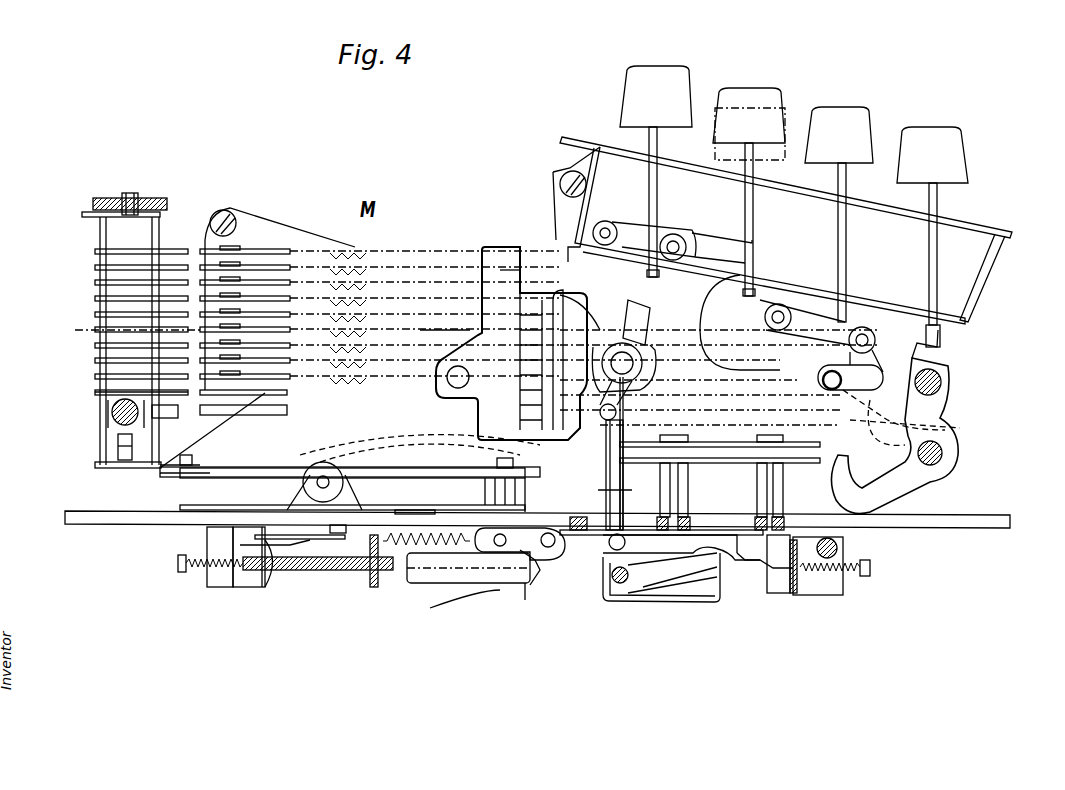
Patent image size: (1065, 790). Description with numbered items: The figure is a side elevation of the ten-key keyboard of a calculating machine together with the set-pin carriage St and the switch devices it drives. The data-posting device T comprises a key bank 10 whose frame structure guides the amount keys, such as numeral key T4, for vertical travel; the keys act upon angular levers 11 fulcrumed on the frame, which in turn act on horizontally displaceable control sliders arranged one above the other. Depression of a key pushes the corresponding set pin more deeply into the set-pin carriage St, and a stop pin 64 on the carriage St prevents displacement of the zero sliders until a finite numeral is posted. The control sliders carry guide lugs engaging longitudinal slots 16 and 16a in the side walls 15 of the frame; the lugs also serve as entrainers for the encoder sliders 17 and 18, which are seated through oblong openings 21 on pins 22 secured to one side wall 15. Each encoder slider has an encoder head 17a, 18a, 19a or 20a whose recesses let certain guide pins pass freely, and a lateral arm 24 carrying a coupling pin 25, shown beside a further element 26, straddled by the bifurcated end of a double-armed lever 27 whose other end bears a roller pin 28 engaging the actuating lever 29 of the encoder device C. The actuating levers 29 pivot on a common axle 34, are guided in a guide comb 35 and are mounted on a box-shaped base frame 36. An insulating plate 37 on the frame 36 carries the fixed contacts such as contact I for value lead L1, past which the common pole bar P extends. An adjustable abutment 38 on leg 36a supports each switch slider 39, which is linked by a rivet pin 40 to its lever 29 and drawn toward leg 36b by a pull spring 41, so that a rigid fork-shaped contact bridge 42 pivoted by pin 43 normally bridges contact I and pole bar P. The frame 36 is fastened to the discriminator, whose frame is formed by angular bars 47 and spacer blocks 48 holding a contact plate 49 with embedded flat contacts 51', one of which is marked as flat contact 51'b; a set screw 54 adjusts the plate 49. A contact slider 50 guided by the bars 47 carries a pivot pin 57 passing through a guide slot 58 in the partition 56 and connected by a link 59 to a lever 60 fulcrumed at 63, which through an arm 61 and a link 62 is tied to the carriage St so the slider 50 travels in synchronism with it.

The key bank 10 is at (1000, 230).
The angular lever 11 is at (740, 245).
The side wall 15 is at (215, 232).
The longitudinal slot 16 is at (515, 300).
The longitudinal slot 16a is at (262, 250).
The encoder slider 17 is at (900, 385).
The encoder slider 18 is at (950, 434).
The encoder head 17a is at (478, 440).
The encoder head 18a is at (420, 451).
The encoder head 19a is at (429, 451).
The encoder head 20a is at (420, 449).
The oblong opening 21 is at (865, 355).
The pin 22 is at (455, 368).
The lateral arm 24 is at (705, 335).
The coupling pin 25 is at (622, 340).
The pawl 26 is at (640, 318).
The double-armed lever 27 is at (601, 418).
The roller pin 28 is at (616, 420).
The actuating lever 29 is at (606, 492).
The pivot axle 34 is at (620, 585).
The guide comb 35 is at (710, 600).
The base frame 36 is at (832, 592).
The frame leg 36a is at (792, 592).
The frame leg 36b is at (374, 589).
The insulating plate 37 is at (455, 585).
The abutment 38 is at (765, 572).
The switch slider 39 is at (690, 545).
The rivet pin 40 is at (627, 542).
The pull spring 41 is at (418, 560).
The contact bridge 42 is at (530, 530).
The pin 43 is at (548, 534).
The bar 47 is at (248, 582).
The spacer block 48 is at (218, 582).
The contact plate 49 is at (265, 584).
The contact slider 50 is at (210, 538).
The flat contact 51' is at (318, 593).
The tooth 51'b is at (274, 512).
The set screw 54 is at (180, 570).
The partition 56 is at (102, 525).
The pivot pin 57 is at (393, 530).
The guide slot 58 is at (728, 520).
The link 59 is at (425, 528).
The lever 60 is at (452, 506).
The arm 61 is at (232, 468).
The link 62 is at (185, 462).
The fulcrum 63 is at (505, 470).
The stop pin 64 is at (115, 418).
The set-pin carriage St is at (150, 228).
The data-posting device T is at (940, 47).
The numeral key T4 is at (785, 158).
The pole bar P is at (535, 575).
The encoder device C is at (581, 586).
The fixed contact I is at (528, 598).
The value lead L1 is at (440, 610).